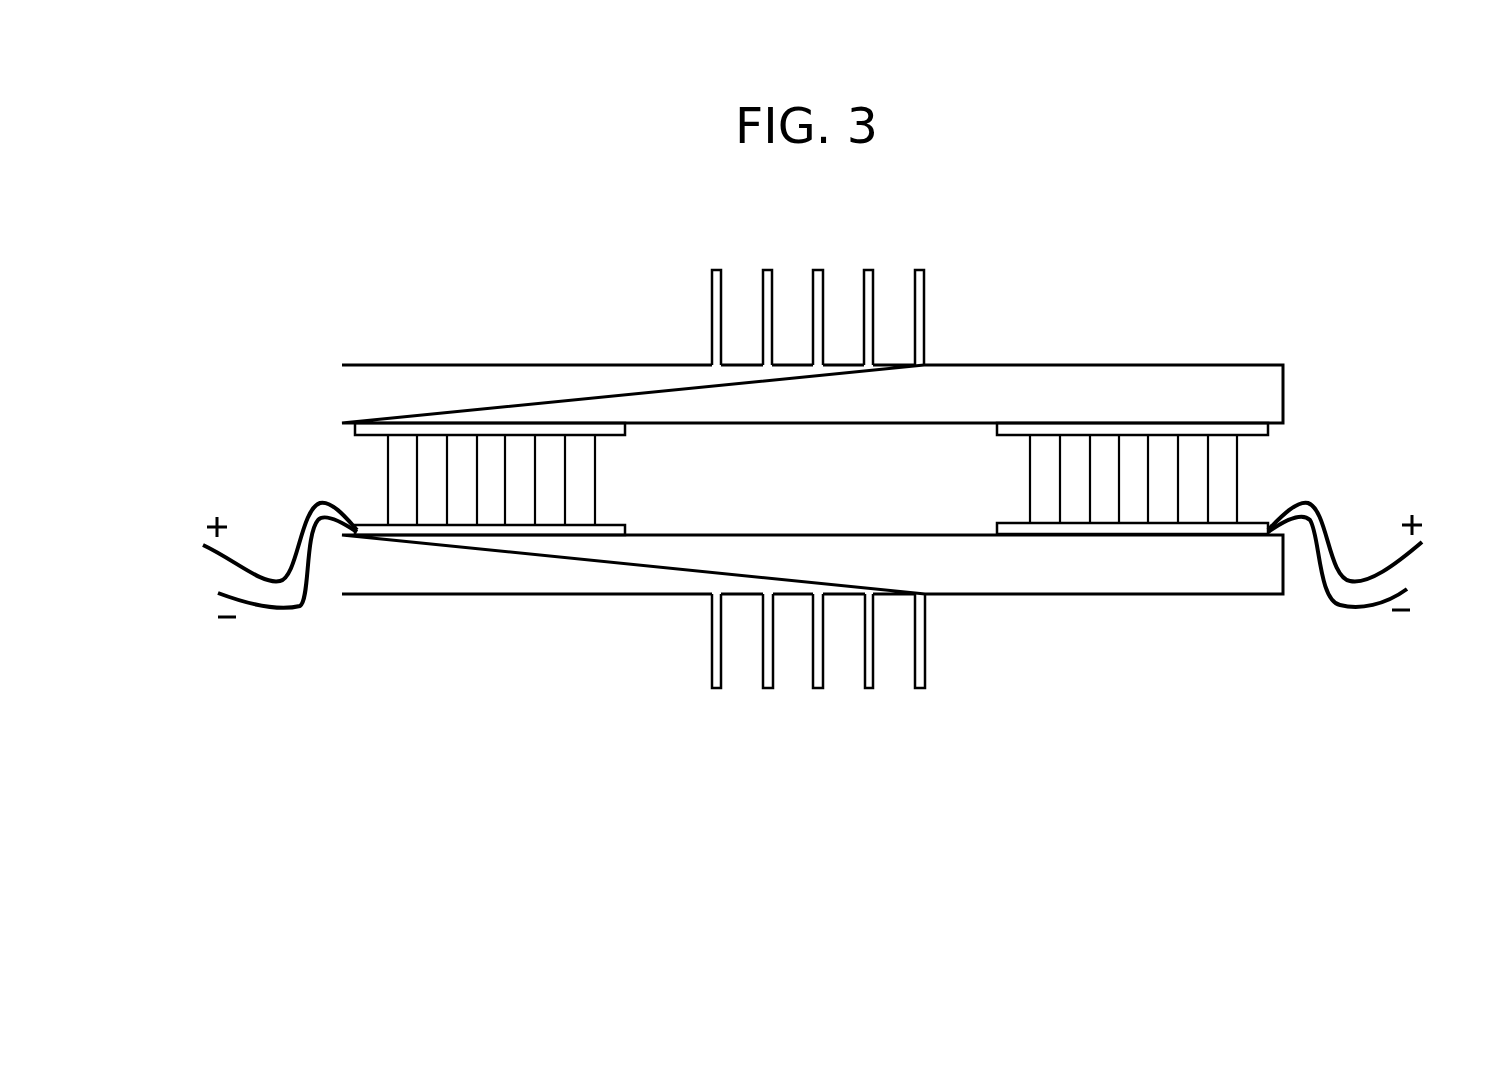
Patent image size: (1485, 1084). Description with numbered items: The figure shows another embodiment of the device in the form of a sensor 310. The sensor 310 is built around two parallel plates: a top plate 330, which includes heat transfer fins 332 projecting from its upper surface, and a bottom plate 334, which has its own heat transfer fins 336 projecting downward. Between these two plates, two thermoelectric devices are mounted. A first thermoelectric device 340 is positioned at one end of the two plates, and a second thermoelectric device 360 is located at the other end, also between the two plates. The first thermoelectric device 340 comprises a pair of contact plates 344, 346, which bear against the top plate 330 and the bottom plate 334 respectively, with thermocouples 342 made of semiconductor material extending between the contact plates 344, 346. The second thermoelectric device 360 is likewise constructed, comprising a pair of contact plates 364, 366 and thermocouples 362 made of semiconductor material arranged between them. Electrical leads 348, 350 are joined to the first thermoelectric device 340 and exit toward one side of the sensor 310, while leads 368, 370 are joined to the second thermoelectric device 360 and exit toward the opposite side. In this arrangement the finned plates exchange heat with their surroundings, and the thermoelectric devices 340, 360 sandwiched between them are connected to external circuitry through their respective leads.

The sensor 310 is at (1090, 301).
The top plate 330 is at (643, 365).
The heat transfer fins 332 is at (712, 270).
The bottom plate 334 is at (1115, 594).
The heat transfer fins 336 is at (872, 687).
The first thermoelectric device 340 is at (501, 432).
The thermocouples 342 is at (588, 500).
The contact plate 344 is at (625, 425).
The contact plate 346 is at (625, 530).
The electrical lead 348 is at (252, 542).
The electrical lead 350 is at (259, 567).
The second thermoelectric device 360 is at (1124, 431).
The thermocouples 362 is at (1037, 500).
The contact plate 364 is at (997, 426).
The contact plate 366 is at (997, 530).
The lead 368 is at (1374, 542).
The lead 370 is at (1367, 563).